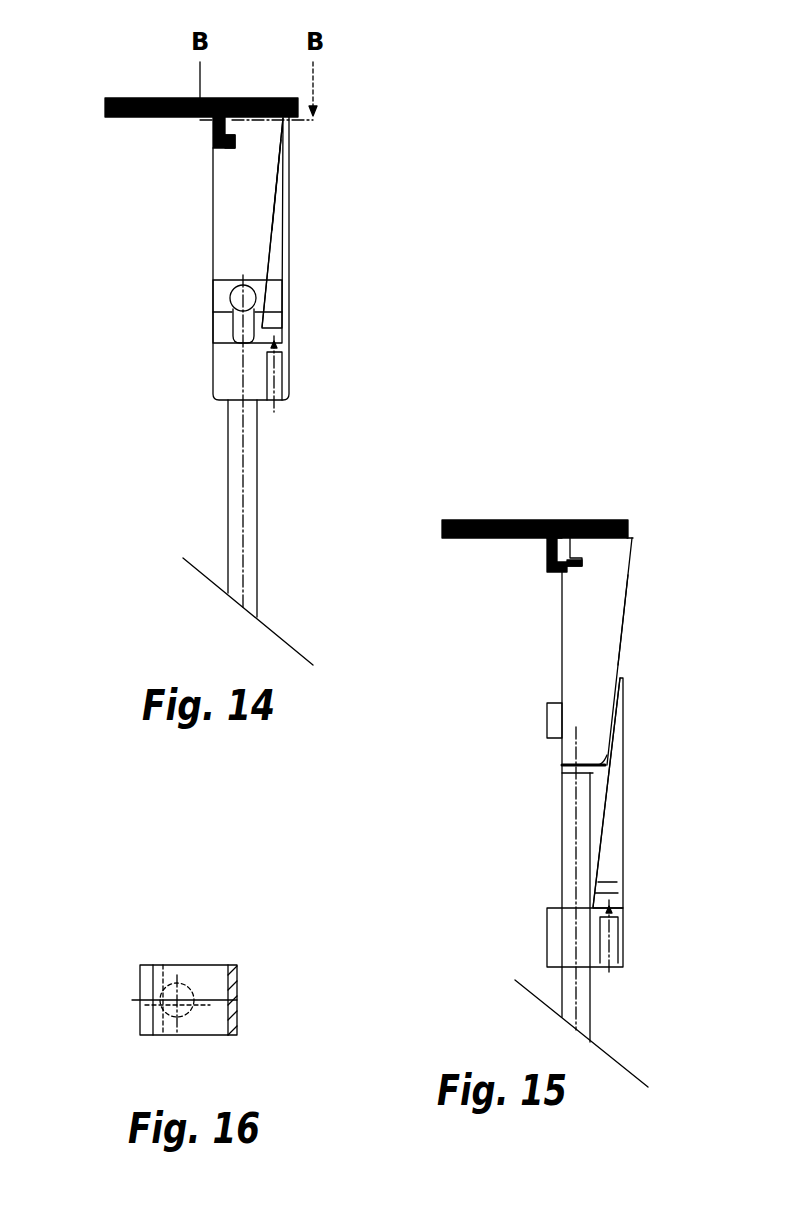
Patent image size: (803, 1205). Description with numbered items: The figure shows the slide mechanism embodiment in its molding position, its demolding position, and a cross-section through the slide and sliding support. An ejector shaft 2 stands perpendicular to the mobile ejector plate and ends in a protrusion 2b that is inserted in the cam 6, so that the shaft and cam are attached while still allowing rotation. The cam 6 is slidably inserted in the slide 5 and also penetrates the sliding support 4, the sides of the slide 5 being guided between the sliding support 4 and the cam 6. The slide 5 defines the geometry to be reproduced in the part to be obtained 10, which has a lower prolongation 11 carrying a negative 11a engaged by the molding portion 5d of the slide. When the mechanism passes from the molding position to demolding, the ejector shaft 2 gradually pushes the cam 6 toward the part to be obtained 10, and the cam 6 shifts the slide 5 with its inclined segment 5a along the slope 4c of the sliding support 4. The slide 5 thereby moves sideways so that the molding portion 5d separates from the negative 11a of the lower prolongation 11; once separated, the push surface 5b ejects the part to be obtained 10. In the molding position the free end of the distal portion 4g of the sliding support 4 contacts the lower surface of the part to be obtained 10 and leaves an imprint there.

In FIG. 14, the part to be obtained 10 is at (165, 97).
In FIG. 15, the part to be obtained 10 is at (467, 520).
In FIG. 14, the lower prolongation 11 is at (212, 138).
In FIG. 15, the lower prolongation 11 is at (547, 548).
In FIG. 14, the negative 11a is at (237, 143).
In FIG. 15, the negative 11a is at (572, 570).
In FIG. 14, the slide 5 is at (223, 190).
In FIG. 15, the slide 5 is at (575, 598).
In FIG. 14, the inclined segment 5a is at (275, 262).
In FIG. 15, the inclined segment 5a is at (622, 630).
In FIG. 15, the push surface 5b is at (630, 537).
In FIG. 16, the push surface 5b is at (203, 975).
In FIG. 15, the molding portion 5d is at (550, 520).
In FIG. 14, the sliding support 4 is at (280, 332).
In FIG. 15, the sliding support 4 is at (617, 897).
In FIG. 14, the slope 4c is at (266, 229).
In FIG. 15, the slope 4c is at (600, 822).
In FIG. 14, the distal portion 4g is at (291, 200).
In FIG. 15, the distal portion 4g is at (625, 792).
In FIG. 16, the distal portion 4g is at (237, 987).
In FIG. 14, the cam 6 is at (220, 297).
In FIG. 15, the cam 6 is at (545, 725).
In FIG. 14, the ejector shaft 2 is at (226, 470).
In FIG. 15, the ejector shaft 2 is at (567, 843).
In FIG. 14, the protrusion 2b is at (240, 298).